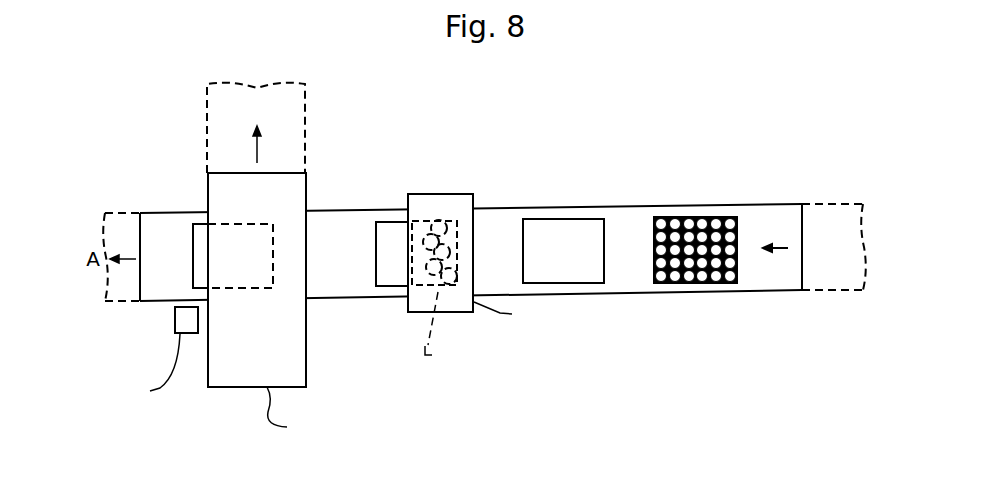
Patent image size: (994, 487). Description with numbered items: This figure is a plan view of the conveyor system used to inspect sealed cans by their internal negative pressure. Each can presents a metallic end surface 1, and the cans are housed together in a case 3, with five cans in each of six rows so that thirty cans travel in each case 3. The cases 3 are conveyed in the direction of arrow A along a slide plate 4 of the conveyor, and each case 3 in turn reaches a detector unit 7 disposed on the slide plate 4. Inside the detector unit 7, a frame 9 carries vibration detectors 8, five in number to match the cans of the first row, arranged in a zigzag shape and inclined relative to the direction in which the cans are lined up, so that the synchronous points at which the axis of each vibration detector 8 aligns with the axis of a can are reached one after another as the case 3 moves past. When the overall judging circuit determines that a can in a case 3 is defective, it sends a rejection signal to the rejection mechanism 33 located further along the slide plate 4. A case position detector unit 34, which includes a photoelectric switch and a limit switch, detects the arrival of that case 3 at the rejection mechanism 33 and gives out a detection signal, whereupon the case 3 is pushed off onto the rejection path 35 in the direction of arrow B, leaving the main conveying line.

The metallic end surface 1 is at (700, 220).
The case 3 is at (663, 217).
The slide plate 4 is at (500, 218).
The detector unit 7 is at (465, 188).
The vibration detectors 8 is at (440, 222).
The frame 9 is at (415, 194).
The rejection mechanism 33 is at (307, 188).
The case position detector unit 34 is at (175, 326).
The rejection path 35 is at (305, 106).